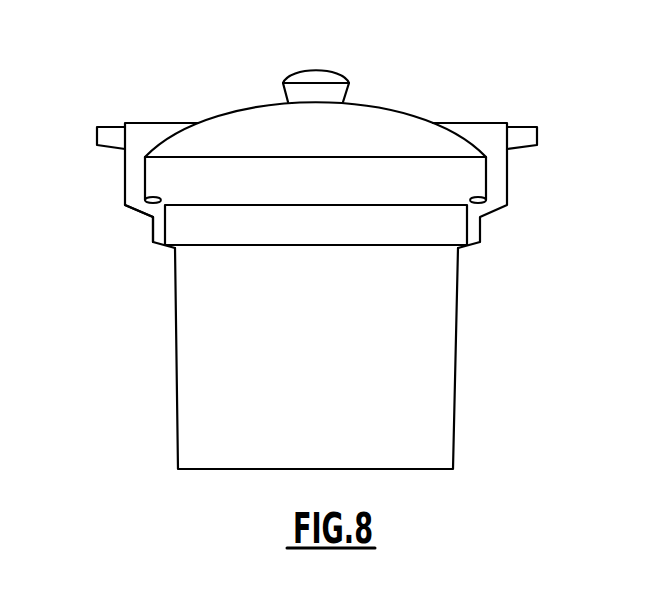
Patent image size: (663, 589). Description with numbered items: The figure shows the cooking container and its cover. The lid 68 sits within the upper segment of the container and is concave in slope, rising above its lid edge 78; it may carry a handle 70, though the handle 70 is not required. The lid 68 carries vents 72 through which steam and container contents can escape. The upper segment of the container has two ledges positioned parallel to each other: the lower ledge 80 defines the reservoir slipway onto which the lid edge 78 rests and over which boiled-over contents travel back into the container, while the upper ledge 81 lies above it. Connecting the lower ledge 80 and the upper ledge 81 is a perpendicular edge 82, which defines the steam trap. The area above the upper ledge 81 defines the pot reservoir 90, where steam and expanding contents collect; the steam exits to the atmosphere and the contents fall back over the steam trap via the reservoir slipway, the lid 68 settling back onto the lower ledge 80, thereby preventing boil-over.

The lid 68 is at (516, 68).
The handle 70 is at (352, 91).
The vents 72 is at (480, 204).
The lid edge 78 is at (342, 246).
The lower ledge 80 is at (282, 208).
The upper ledge 81 is at (138, 211).
The perpendicular edge 82 is at (162, 246).
The pot reservoir 90 is at (125, 172).